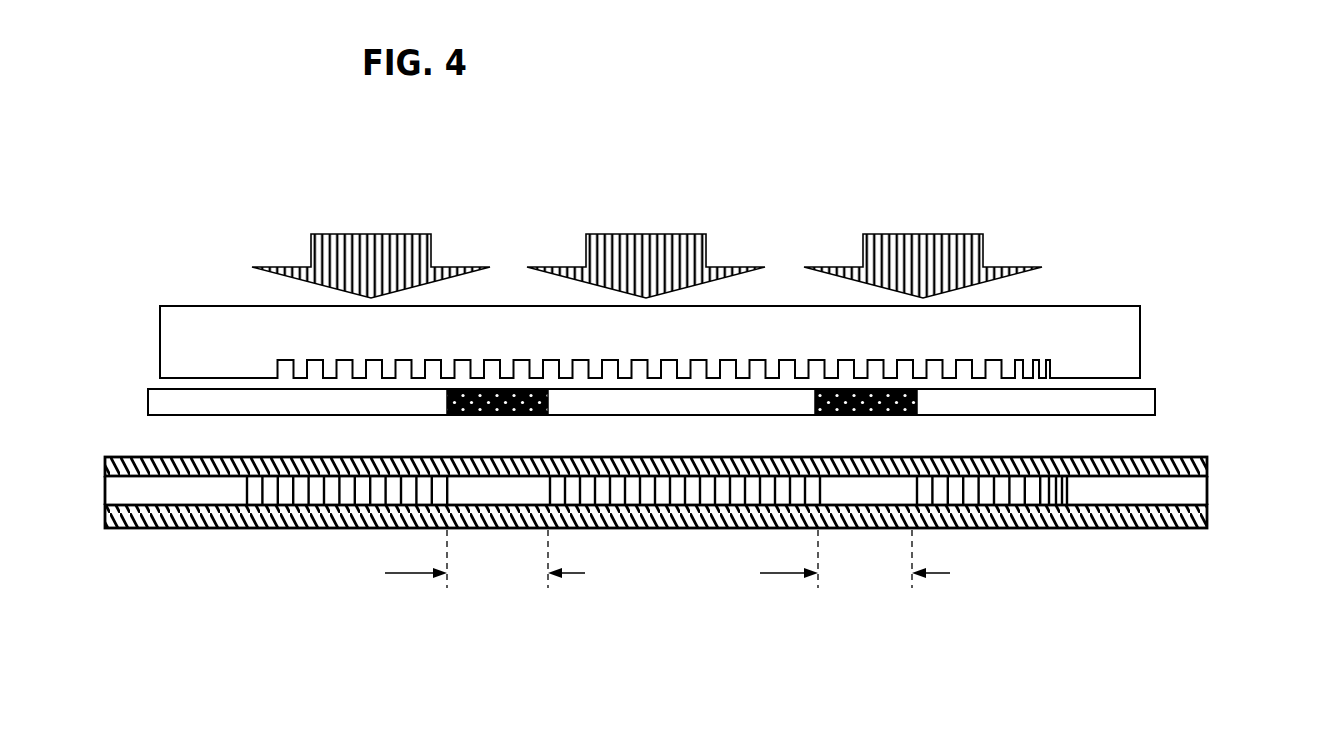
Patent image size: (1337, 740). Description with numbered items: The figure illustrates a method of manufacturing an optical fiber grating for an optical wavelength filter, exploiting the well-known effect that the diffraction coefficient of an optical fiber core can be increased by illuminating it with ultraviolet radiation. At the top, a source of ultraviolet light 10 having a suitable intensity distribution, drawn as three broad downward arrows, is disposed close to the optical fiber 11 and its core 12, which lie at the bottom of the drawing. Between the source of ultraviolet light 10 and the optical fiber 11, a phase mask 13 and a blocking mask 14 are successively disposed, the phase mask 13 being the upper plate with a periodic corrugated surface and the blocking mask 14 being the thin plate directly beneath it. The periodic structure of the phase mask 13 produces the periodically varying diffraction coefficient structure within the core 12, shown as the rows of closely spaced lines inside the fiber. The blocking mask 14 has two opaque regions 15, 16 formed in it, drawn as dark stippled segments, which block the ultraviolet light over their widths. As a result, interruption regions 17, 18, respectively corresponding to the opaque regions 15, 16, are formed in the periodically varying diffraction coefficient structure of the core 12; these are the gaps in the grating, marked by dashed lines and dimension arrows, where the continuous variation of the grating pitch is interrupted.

The source of ultraviolet light 10 is at (862, 234).
The optical fiber 11 is at (1040, 532).
The core 12 is at (1158, 493).
The phase mask 13 is at (218, 323).
The blocking mask 14 is at (1123, 397).
The opaque region 15 is at (447, 412).
The opaque region 16 is at (917, 405).
The interruption region 17 is at (500, 573).
The interruption region 18 is at (847, 583).